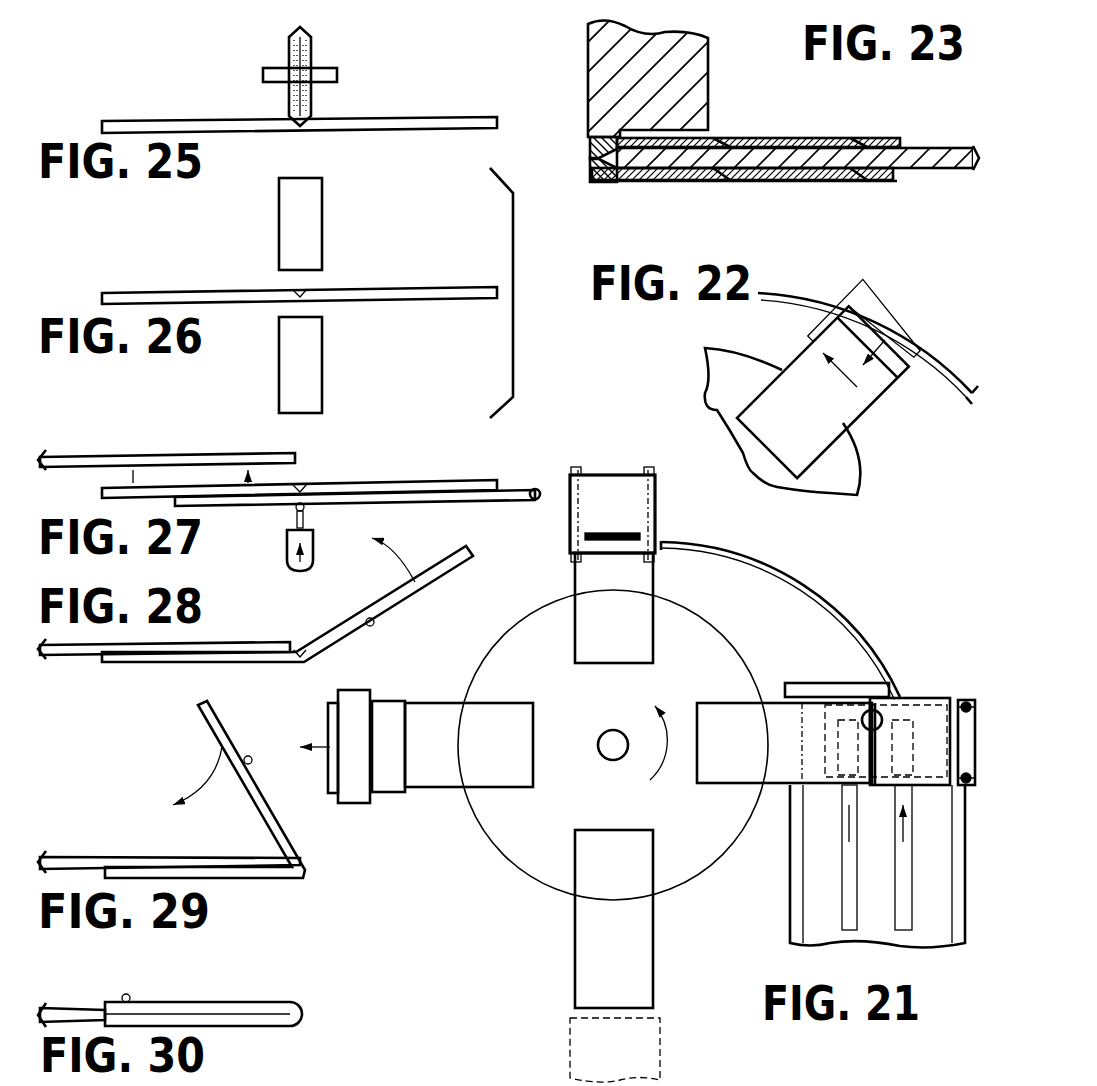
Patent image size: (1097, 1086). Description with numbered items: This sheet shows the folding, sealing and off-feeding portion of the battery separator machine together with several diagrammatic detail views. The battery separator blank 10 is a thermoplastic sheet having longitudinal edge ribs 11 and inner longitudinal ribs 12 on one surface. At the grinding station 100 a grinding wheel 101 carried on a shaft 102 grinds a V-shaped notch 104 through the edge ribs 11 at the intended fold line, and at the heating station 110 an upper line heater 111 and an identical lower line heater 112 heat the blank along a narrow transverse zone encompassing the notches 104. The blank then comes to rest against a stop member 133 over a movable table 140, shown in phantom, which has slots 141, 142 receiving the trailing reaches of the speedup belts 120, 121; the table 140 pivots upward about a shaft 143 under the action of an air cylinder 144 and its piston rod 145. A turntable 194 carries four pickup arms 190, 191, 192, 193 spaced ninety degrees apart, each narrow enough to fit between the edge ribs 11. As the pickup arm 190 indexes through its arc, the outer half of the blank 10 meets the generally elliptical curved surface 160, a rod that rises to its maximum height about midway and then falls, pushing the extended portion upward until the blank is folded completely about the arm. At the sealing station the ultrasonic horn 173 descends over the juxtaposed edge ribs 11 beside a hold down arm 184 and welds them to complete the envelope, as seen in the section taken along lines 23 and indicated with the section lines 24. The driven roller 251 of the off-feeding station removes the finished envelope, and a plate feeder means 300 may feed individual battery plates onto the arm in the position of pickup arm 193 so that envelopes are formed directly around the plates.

In FIG. 25, the battery separator blank 10 is at (434, 116).
In FIG. 26, the battery separator blank 10 is at (414, 286).
In FIG. 27, the battery separator blank 10 is at (426, 480).
In FIG. 28, the battery separator blank 10 is at (403, 598).
In FIG. 29, the battery separator blank 10 is at (254, 883).
In FIG. 30, the battery separator blank 10 is at (312, 1001).
In FIG. 23, the battery separator blank 10 is at (807, 130).
In FIG. 22, the battery separator blank 10 is at (892, 297).
In FIG. 21, the battery separator blank 10 is at (391, 795).
In FIG. 23, the longitudinal edge ribs 11 is at (593, 167).
In FIG. 23, the inner longitudinal ribs 12 is at (833, 180).
In FIG. 21, the section lines 23— 23 is at (638, 481).
In FIG. 21, the section lines 24— 24 is at (607, 468).
In FIG. 25, the grinding station 100 is at (247, 67).
In FIG. 25, the grinding wheel 101 is at (311, 46).
In FIG. 25, the shaft 102 is at (337, 74).
In FIG. 26, the V-shaped notch 104 is at (299, 294).
In FIG. 27, the V-shaped notch 104 is at (301, 486).
In FIG. 28, the V-shaped notch 104 is at (300, 651).
In FIG. 26, the heating station 110 is at (332, 230).
In FIG. 26, the upper line heater 111 is at (290, 222).
In FIG. 26, the lower line heater 112 is at (312, 367).
In FIG. 21, the speedup belt 120 is at (903, 922).
In FIG. 21, the speedup belt 121 is at (850, 923).
In FIG. 21, the stop member 133 is at (808, 690).
In FIG. 27, the movable table 140 is at (453, 501).
In FIG. 21, the movable table 140 is at (937, 722).
In FIG. 21, the slot 141 is at (902, 735).
In FIG. 21, the slot 142 is at (833, 790).
In FIG. 27, the shaft 143 is at (536, 489).
In FIG. 27, the air cylinder 144 is at (289, 554).
In FIG. 21, the air cylinder 144 is at (866, 711).
In FIG. 27, the piston rod 145 is at (305, 521).
In FIG. 28, the curved surface 160 is at (372, 627).
In FIG. 29, the curved surface 160 is at (250, 757).
In FIG. 30, the curved surface 160 is at (128, 993).
In FIG. 22, the curved surface 160 is at (802, 292).
In FIG. 21, the curved surface 160 is at (843, 594).
In FIG. 23, the ultrasonic horn 173 is at (697, 52).
In FIG. 21, the ultrasonic horn 173 is at (656, 469).
In FIG. 21, the hold down arm 184 is at (585, 537).
In FIG. 27, the pickup arm 190 is at (178, 447).
In FIG. 28, the pickup arm 190 is at (80, 658).
In FIG. 29, the pickup arm 190 is at (72, 860).
In FIG. 30, the pickup arm 190 is at (60, 1008).
In FIG. 22, the pickup arm 190 is at (840, 408).
In FIG. 21, the pickup arm 190 is at (776, 786).
In FIG. 23, the pickup arm 191 is at (950, 153).
In FIG. 21, the pickup arm 191 is at (641, 583).
In FIG. 21, the pickup arm 192 is at (448, 775).
In FIG. 21, the pickup arm 193 is at (588, 958).
In FIG. 22, the turntable 194 is at (843, 473).
In FIG. 21, the turntable 194 is at (523, 856).
In FIG. 21, the driven roller 251 is at (355, 796).
In FIG. 21, the plate feeder means 300 is at (662, 1056).